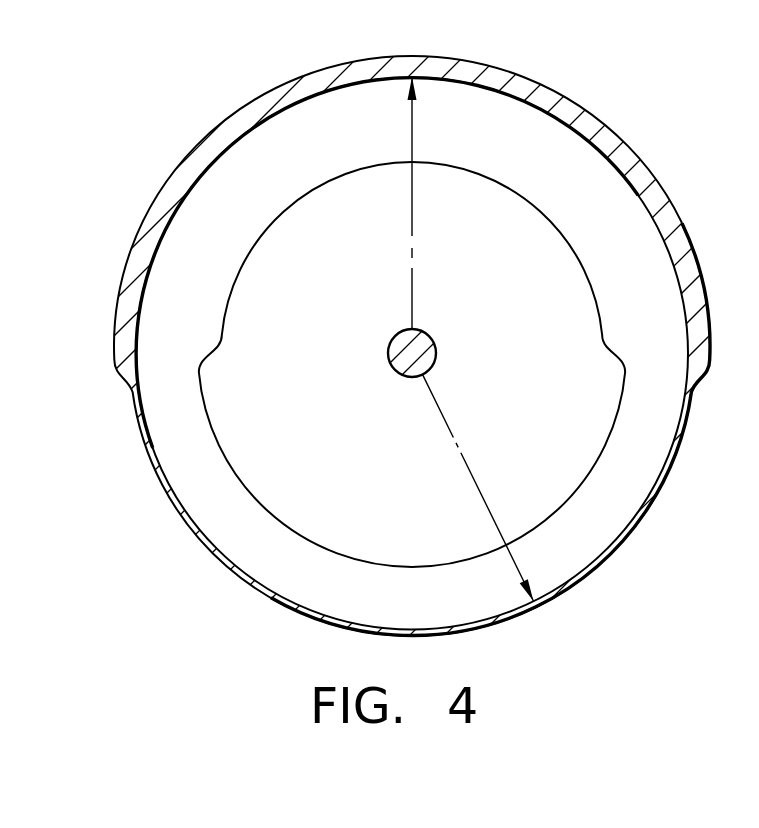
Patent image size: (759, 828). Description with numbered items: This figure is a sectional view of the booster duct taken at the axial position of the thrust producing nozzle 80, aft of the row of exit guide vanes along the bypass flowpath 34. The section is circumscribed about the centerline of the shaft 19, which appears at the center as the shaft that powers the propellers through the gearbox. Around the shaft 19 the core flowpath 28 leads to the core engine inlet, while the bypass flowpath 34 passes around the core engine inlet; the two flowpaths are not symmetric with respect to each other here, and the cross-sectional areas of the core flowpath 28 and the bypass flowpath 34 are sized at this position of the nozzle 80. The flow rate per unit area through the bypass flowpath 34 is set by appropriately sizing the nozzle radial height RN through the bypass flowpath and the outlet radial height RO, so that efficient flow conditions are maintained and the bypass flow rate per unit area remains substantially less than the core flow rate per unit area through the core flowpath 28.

The shaft 19 is at (428, 336).
The core flowpath 28 is at (371, 141).
The bypass flowpath 34 is at (381, 609).
The thrust producing nozzle 80 is at (469, 633).
The outlet radial height RO is at (412, 123).
The nozzle radial height RN is at (513, 567).